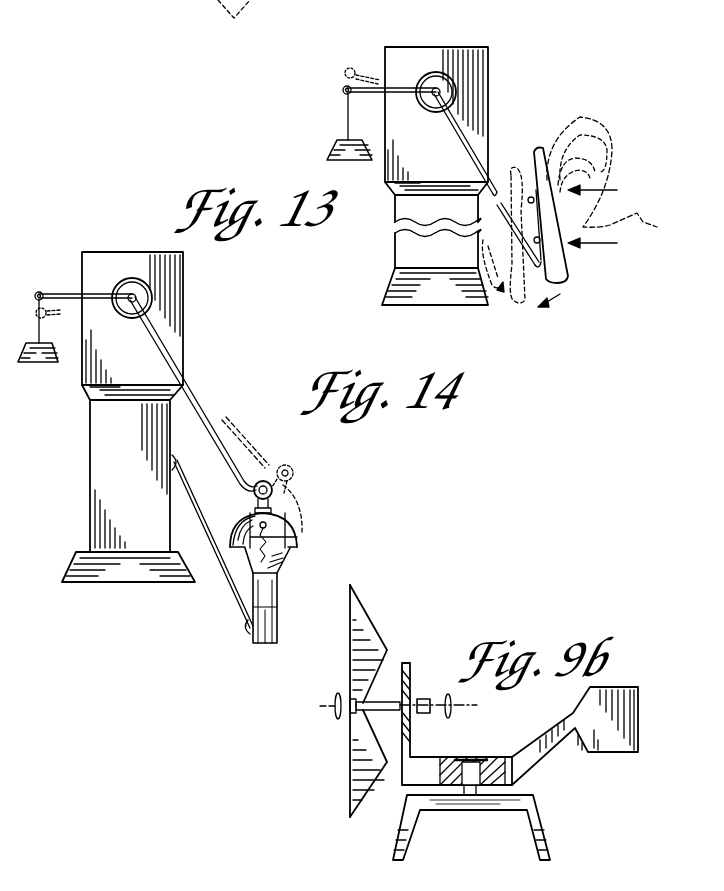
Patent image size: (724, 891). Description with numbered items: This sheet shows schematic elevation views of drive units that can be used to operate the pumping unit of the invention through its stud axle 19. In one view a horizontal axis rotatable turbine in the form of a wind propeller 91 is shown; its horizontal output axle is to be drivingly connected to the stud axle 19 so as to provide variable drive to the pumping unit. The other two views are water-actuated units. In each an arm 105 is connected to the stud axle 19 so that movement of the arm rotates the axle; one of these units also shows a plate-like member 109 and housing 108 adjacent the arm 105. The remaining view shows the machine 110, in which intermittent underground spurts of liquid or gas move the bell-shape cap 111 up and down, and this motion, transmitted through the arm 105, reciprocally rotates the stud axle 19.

In FIG. 13, the stud axle 19 is at (436, 88).
In FIG. 14, the stud axle 19 is at (132, 294).
In FIG. 9b, the stud axle 19 is at (424, 698).
In FIG. 9b, the wind propeller 91 is at (488, 708).
In FIG. 13, the arm 105 is at (478, 135).
In FIG. 14, the arm 105 is at (197, 410).
In FIG. 13, the housing 108 is at (548, 50).
In FIG. 13, the flap plate 109 is at (556, 271).
In FIG. 14, the machine 110 is at (186, 329).
In FIG. 14, the bell-shape cap 111 is at (295, 530).